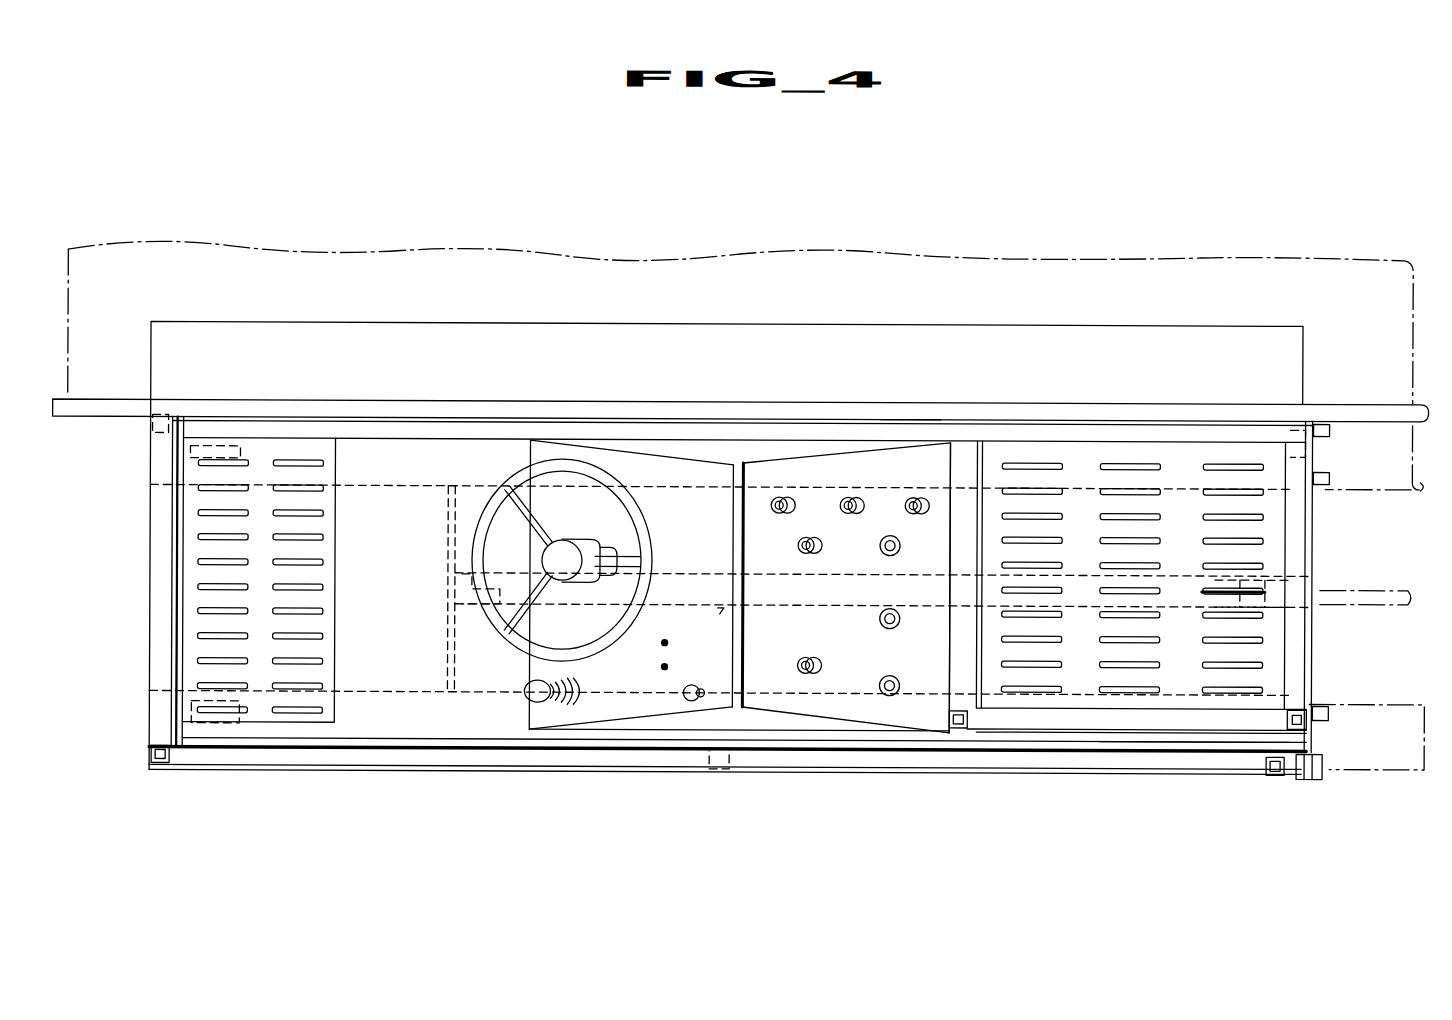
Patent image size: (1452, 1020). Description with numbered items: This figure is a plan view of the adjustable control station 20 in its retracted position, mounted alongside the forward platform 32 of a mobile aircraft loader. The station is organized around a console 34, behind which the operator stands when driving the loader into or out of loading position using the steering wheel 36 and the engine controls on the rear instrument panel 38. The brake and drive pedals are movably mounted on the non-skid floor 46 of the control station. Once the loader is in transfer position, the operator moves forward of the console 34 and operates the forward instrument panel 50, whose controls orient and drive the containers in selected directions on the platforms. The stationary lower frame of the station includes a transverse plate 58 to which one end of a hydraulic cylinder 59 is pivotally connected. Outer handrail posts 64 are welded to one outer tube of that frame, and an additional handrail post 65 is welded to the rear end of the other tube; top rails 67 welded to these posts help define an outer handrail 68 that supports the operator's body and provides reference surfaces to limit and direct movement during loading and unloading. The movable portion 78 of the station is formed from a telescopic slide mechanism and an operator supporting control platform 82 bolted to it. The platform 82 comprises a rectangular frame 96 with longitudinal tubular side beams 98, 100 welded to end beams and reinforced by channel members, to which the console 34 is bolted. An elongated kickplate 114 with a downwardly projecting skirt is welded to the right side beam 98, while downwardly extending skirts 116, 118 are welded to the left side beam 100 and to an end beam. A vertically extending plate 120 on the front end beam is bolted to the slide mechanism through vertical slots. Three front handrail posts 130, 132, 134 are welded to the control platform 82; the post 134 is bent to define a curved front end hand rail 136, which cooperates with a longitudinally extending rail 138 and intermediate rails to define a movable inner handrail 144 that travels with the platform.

The adjustable control station 20 is at (1275, 313).
The forward platform 32 is at (1172, 248).
The console 34 is at (740, 445).
The steering wheel 36 is at (480, 525).
The rear instrument panel 38 is at (882, 586).
The non-skid floor 46 is at (358, 448).
The forward instrument panel 50 is at (846, 587).
The transverse plate 58 is at (447, 622).
The hydraulic cylinder 59 is at (718, 612).
The outer handrail posts 64 is at (150, 758).
The additional handrail post 65 is at (150, 428).
The top rails 67 is at (152, 578).
The outer handrail 68 is at (380, 760).
The movable portion 78 is at (910, 427).
The operator supporting control platform 82 is at (427, 440).
The rectangular frame 96 is at (980, 430).
The right side beam 98 is at (1032, 740).
The left side beam 100 is at (1055, 430).
The kickplate 114 is at (1290, 745).
The skirt 116 is at (270, 418).
The skirt 118 is at (180, 518).
The vertically extending plate 120 is at (1312, 535).
The front handrail post 130 is at (957, 730).
The front handrail post 132 is at (1298, 708).
The front handrail post 134 is at (1320, 455).
The curved front end hand rail 136 is at (1305, 508).
The longitudinally extending rail 138 is at (1140, 720).
The movable inner handrail 144 is at (1298, 420).